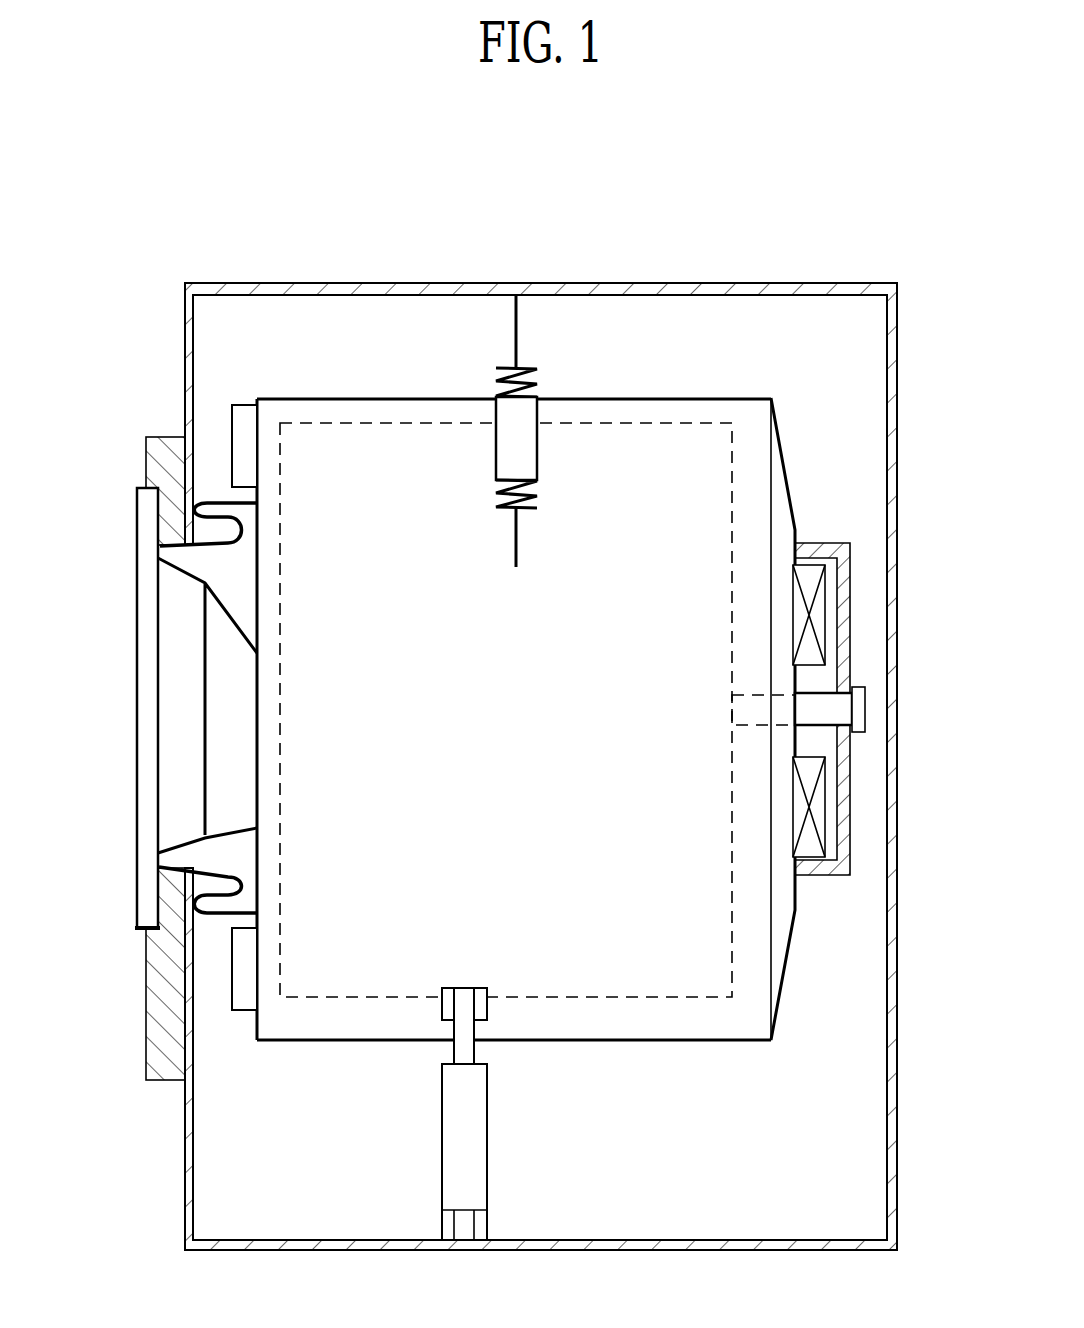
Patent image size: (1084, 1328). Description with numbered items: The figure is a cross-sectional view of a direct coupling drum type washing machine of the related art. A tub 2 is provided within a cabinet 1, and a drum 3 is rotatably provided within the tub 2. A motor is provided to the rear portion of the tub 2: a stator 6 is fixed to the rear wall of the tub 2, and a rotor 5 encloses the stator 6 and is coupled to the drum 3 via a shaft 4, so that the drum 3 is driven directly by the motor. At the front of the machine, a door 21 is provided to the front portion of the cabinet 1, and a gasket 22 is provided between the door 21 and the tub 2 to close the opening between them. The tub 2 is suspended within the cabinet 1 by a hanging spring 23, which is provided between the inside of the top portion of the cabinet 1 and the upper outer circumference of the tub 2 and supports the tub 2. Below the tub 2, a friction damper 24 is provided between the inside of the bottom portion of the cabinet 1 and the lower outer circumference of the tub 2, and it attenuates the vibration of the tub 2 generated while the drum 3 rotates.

The cabinet 1 is at (292, 287).
The tub 2 is at (672, 399).
The drum 3 is at (396, 423).
The shaft 4 is at (813, 708).
The rotor 5 is at (843, 812).
The stator 6 is at (817, 613).
The door 21 is at (145, 722).
The gasket 22 is at (222, 912).
The hanging spring 23 is at (532, 368).
The friction damper 24 is at (472, 1147).